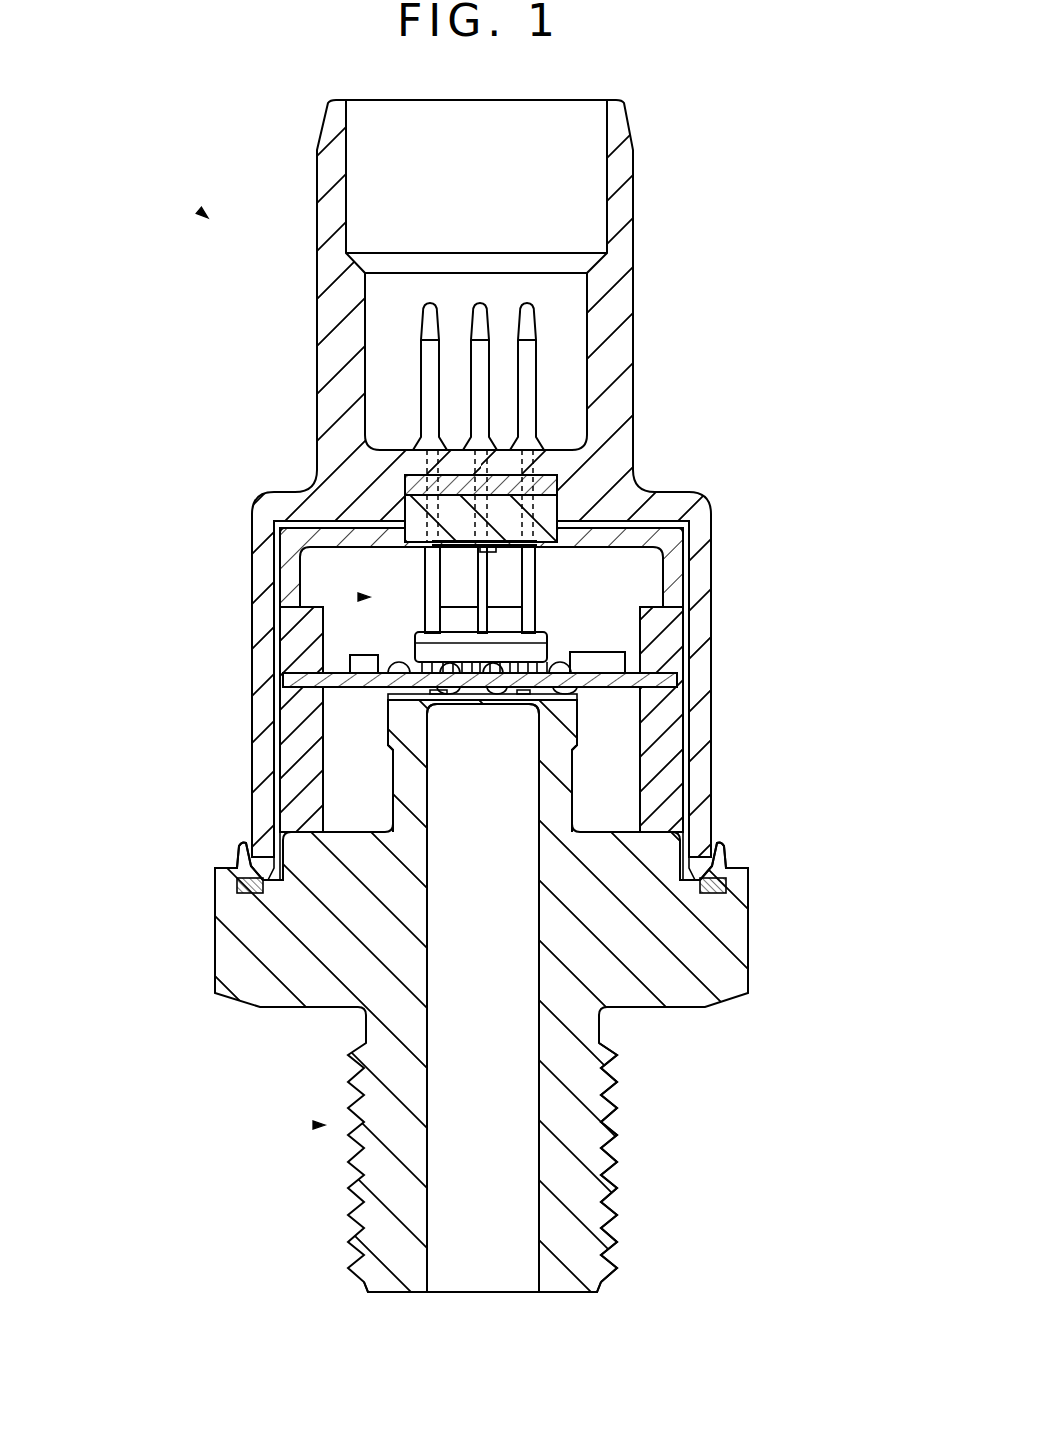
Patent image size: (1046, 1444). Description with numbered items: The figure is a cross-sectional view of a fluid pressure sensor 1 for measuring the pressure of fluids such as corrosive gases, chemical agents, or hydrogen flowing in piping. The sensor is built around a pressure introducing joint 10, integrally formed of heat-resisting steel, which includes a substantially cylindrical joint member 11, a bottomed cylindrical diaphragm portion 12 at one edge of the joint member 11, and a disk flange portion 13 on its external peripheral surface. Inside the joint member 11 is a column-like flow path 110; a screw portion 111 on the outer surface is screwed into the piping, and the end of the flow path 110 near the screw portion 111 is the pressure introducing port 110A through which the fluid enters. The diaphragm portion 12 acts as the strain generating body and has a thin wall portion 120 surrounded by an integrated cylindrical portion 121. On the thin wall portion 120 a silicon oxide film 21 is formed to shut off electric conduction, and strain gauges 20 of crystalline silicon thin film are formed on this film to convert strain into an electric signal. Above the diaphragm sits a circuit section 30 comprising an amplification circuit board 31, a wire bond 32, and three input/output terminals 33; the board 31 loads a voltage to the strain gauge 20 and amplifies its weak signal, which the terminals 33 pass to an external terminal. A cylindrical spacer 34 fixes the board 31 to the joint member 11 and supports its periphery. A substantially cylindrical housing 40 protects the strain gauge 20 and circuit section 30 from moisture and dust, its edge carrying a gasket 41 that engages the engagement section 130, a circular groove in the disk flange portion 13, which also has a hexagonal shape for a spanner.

The fluid pressure sensor 1 is at (206, 217).
The pressure introducing joint 10 is at (523, 772).
The joint member 11 is at (382, 1284).
The flow path 110 is at (427, 1165).
The pressure introducing port 110A is at (541, 1262).
The screw portion 111 is at (608, 1228).
The diaphragm portion 12 is at (580, 741).
The thin wall portion 120 is at (510, 718).
The cylindrical portion 121 is at (554, 784).
The disk flange portion 13 is at (671, 934).
The engagement section 130 is at (720, 898).
The strain gauge 20 is at (458, 700).
The silicon oxide film 21 is at (497, 705).
The circuit section 30 is at (362, 597).
The amplification circuit board 31 is at (340, 670).
The wire bond 32 is at (562, 667).
The input/output terminals 33 is at (530, 385).
The spacer 34 is at (667, 657).
The housing 40 is at (345, 355).
The gasket 41 is at (726, 888).